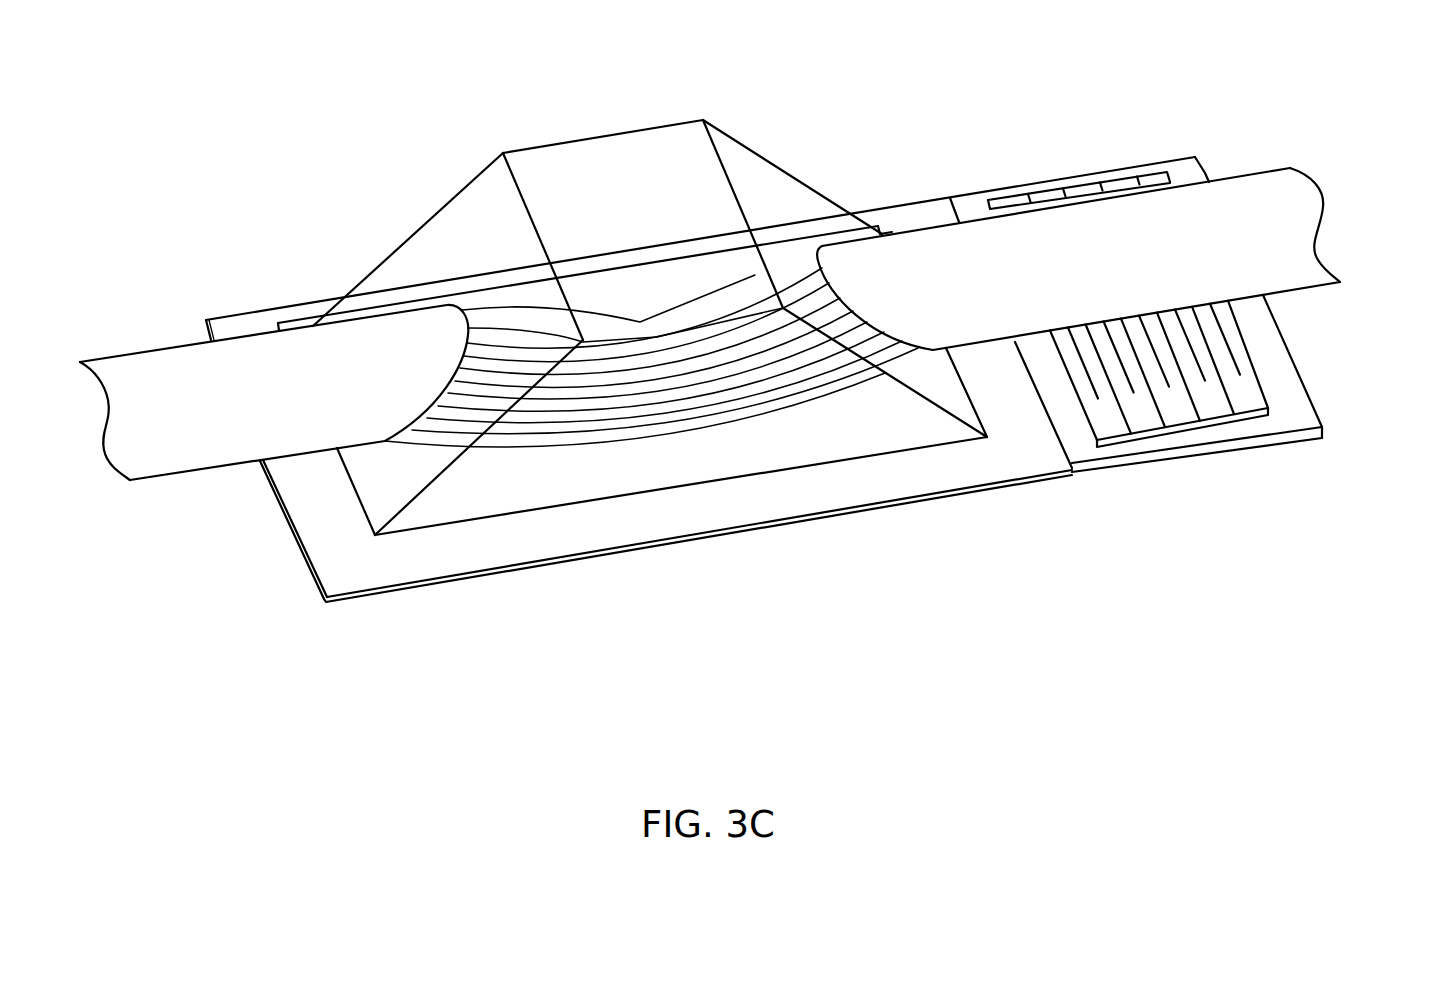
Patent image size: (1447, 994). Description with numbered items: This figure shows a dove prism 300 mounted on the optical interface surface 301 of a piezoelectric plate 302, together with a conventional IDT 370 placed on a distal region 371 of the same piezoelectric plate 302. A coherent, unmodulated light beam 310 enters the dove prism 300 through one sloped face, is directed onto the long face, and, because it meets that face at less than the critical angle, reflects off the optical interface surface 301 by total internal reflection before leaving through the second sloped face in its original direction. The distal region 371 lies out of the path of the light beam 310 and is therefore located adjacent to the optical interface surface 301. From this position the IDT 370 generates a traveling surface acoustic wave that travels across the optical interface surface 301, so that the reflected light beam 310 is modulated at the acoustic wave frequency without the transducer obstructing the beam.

The dove prism 300 is at (440, 96).
The optical interface surface 301 is at (347, 264).
The piezoelectric plate 302 is at (1030, 481).
The light beam 310 is at (1256, 207).
The IDT 370 is at (1311, 356).
The distal region 371 is at (1080, 498).